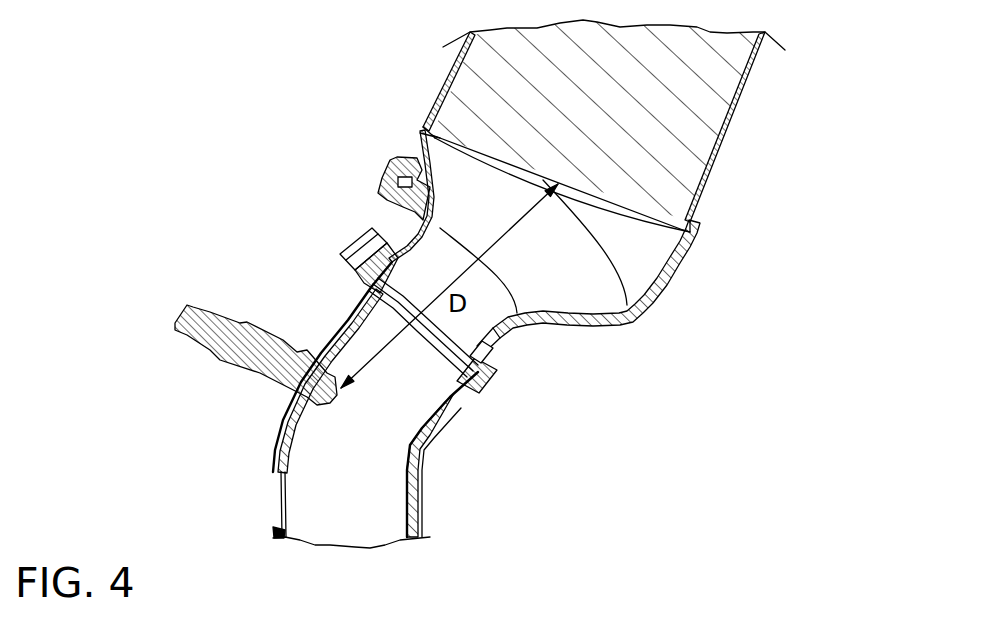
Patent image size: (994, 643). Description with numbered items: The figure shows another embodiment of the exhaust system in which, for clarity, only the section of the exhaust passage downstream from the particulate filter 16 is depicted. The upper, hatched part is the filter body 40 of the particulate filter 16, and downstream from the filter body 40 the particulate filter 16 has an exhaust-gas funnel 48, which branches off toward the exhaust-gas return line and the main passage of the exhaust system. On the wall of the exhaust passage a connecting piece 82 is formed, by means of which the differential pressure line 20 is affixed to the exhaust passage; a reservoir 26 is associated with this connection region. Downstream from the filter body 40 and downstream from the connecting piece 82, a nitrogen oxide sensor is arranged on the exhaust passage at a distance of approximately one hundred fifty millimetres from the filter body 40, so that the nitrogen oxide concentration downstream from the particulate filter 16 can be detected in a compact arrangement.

The particulate filter 16 is at (717, 87).
The filter body 40 is at (695, 127).
The connecting piece 82 is at (402, 163).
The differential pressure line 20 is at (370, 157).
The reservoir 26 is at (445, 192).
The exhaust-gas funnel 48 is at (635, 270).